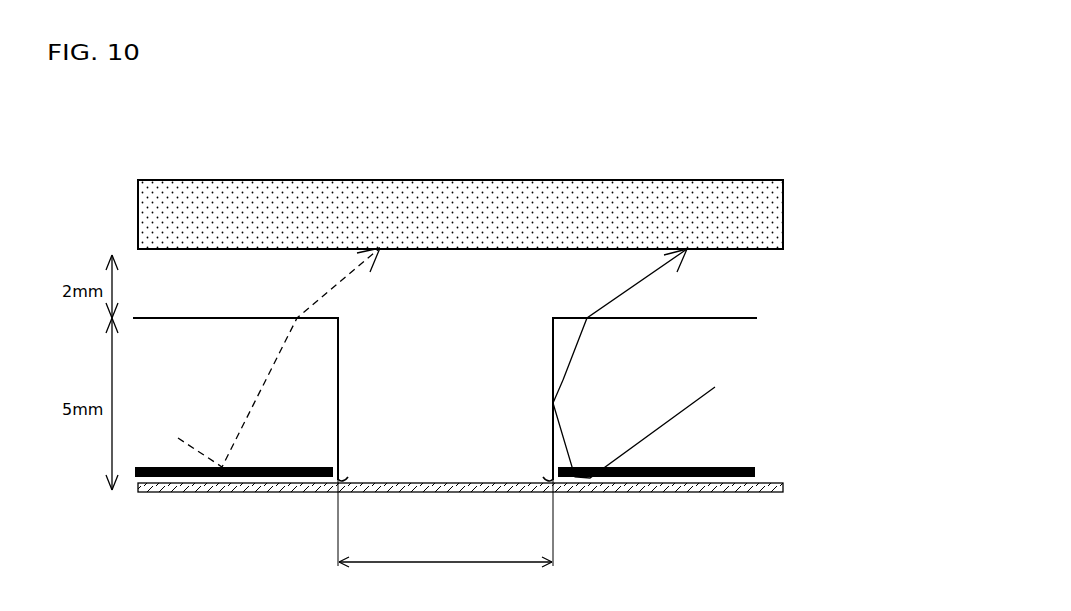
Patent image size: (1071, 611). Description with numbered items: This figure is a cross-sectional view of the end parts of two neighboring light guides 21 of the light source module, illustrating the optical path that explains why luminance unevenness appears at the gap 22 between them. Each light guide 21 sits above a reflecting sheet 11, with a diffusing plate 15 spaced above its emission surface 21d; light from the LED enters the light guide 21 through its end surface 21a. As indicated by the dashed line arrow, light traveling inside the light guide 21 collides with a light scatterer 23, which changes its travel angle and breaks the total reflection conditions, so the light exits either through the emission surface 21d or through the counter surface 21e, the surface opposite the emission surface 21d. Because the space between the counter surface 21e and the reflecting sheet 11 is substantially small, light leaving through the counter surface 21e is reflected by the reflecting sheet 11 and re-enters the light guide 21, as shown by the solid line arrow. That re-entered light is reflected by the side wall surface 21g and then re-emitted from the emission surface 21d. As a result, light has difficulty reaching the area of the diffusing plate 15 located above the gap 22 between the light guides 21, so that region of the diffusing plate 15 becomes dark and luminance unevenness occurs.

The diffusing plate 15 is at (721, 200).
The reflecting sheet 11 is at (785, 490).
The light scatterer 23 is at (197, 467).
The light guide 21 is at (340, 393).
The end surface 21a is at (178, 318).
The emission surface 21d is at (738, 318).
The side wall surface 21g is at (553, 340).
The counter surface 21e is at (343, 476).
The gap 22 is at (445, 523).